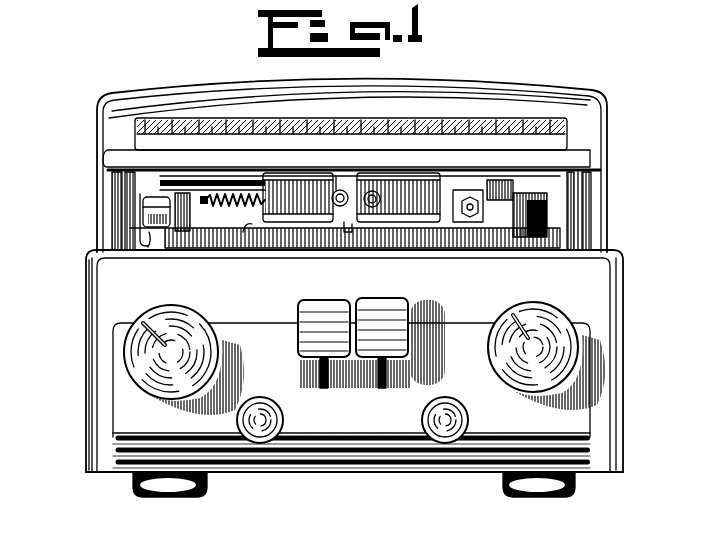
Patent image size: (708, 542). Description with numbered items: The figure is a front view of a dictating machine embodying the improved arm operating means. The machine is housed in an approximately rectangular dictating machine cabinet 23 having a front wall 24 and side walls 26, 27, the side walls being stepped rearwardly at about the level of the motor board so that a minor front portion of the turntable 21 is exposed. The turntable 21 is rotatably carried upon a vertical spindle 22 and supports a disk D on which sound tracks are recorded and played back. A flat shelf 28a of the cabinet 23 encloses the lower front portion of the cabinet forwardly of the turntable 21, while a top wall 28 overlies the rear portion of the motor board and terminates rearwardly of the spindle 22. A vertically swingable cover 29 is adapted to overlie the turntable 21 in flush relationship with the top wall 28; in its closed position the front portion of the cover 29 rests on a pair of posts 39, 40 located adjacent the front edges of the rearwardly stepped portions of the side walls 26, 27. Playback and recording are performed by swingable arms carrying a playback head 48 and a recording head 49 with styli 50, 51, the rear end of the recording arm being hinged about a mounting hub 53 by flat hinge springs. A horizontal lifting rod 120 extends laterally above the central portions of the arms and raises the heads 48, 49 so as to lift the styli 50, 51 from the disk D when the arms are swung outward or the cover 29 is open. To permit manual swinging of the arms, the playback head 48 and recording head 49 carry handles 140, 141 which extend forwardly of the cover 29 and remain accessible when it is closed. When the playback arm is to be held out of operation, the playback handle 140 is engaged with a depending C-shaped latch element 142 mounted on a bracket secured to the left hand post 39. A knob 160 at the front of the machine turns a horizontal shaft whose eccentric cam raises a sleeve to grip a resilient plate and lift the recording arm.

The top wall 28 is at (190, 88).
The vertically swingable cover 29 is at (229, 106).
The horizontal lifting rod 120 is at (551, 187).
The left hand cover supporting post 39 is at (128, 229).
The right hand cover supporting post 40 is at (575, 226).
The C-shaped latch element 142 is at (143, 212).
The playback stylus 50 is at (297, 229).
The playback head 48 is at (320, 213).
The playback handle 140 is at (344, 189).
The recording handle 141 is at (379, 190).
The recording head 49 is at (384, 213).
The recording stylus 51 is at (390, 225).
The mounting hub 53 is at (545, 208).
The turntable 21 is at (305, 240).
The vertical spindle 22 is at (352, 229).
The flat shelf 28a is at (150, 249).
The disk D is at (250, 228).
The front wall 24 is at (108, 283).
The dictating machine cabinet 23 is at (88, 314).
The left side wall 26 is at (88, 340).
The right side wall 27 is at (617, 332).
The knob 160 is at (563, 313).